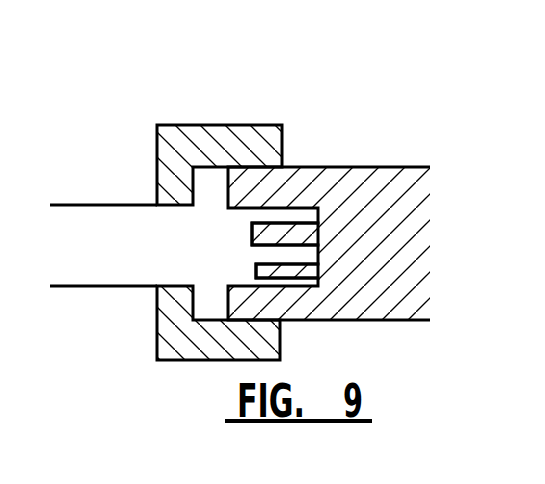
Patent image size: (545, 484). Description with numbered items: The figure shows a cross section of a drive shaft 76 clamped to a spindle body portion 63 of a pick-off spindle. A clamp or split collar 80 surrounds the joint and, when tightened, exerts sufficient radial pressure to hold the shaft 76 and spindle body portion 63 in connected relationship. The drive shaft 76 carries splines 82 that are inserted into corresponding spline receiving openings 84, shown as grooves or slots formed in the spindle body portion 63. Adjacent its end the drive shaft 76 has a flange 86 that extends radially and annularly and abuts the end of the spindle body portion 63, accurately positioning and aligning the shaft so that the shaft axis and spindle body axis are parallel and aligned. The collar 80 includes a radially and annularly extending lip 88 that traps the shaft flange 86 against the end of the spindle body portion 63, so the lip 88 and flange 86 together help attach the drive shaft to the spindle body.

The spindle body portion 63 is at (353, 321).
The drive shaft 76 is at (60, 272).
The split collar 80 is at (228, 125).
The splines 82 is at (300, 214).
The spline receiving openings 84 is at (320, 254).
The shaft flange 86 is at (208, 183).
The lip 88 is at (172, 189).